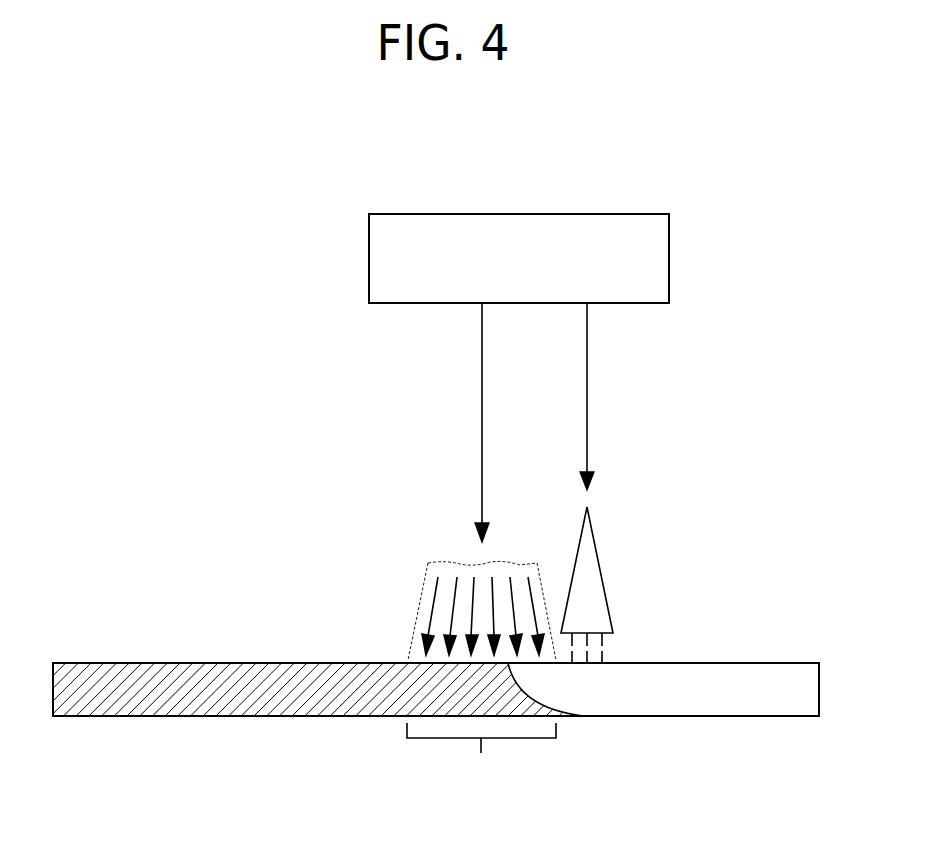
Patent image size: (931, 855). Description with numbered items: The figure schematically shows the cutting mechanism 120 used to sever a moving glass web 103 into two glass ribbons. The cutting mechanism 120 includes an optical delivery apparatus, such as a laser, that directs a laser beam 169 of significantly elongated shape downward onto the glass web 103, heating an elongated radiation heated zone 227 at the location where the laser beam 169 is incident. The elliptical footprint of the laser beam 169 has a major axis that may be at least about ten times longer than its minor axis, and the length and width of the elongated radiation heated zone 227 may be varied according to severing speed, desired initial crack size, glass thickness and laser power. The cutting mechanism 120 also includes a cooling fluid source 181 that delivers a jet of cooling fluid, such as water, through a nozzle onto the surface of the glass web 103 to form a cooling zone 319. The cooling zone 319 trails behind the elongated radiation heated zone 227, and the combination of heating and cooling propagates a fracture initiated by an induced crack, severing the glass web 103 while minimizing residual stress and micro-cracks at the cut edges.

The cutting mechanism 120 is at (368, 281).
The cooling fluid source 181 is at (587, 392).
The laser beam 169 is at (420, 595).
The cooling zone 319 is at (607, 650).
The glass web 103 is at (188, 717).
The elongated radiation heated zone 227 is at (481, 756).